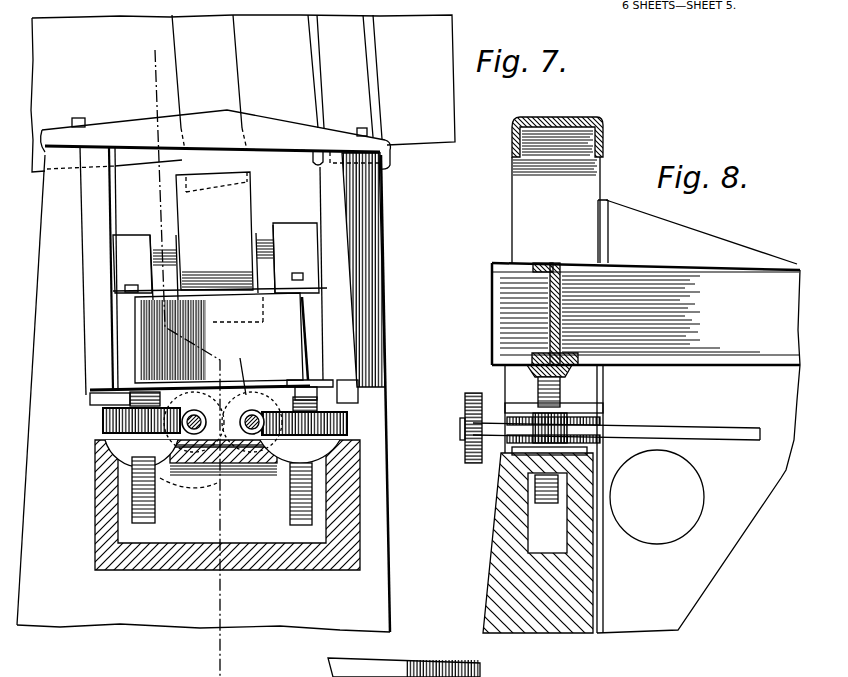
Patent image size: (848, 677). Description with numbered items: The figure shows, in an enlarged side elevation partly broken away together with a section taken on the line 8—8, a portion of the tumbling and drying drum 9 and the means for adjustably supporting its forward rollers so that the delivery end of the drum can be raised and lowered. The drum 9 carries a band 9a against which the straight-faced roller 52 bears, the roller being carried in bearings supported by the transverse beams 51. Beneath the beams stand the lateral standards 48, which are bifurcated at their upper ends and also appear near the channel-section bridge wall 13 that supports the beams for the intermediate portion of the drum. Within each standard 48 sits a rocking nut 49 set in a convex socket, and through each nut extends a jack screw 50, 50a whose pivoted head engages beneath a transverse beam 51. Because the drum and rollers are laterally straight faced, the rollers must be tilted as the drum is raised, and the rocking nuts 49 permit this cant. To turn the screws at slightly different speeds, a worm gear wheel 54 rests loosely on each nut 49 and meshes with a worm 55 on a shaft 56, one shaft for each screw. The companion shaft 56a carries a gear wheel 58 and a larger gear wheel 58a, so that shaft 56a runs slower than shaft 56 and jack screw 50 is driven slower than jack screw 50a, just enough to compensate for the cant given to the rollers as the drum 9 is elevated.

In FIG. 7, the section line 8— 8 is at (162, 76).
In FIG. 7, the tumbling and drying drum 9 is at (344, 201).
In FIG. 7, the band 9a is at (139, 93).
In FIG. 7, the bridge wall 13 is at (343, 556).
In FIG. 7, the lateral standard 48 is at (147, 605).
In FIG. 8, the lateral standard 48 is at (528, 552).
In FIG. 7, the rocking nut 49 is at (120, 442).
In FIG. 8, the rocking nut 49 is at (597, 453).
In FIG. 7, the jack screw 50 is at (308, 505).
In FIG. 8, the jack screw 50 is at (560, 398).
In FIG. 7, the jack screw 50a is at (153, 513).
In FIG. 7, the transverse beam 51 is at (306, 353).
In FIG. 8, the transverse beam 51 is at (646, 314).
In FIG. 7, the roller 52 is at (214, 231).
In FIG. 7, the worm gear wheel 54 is at (348, 424).
In FIG. 8, the worm gear wheel 54 is at (590, 423).
In FIG. 7, the worm 55 is at (103, 419).
In FIG. 7, the shaft 56 is at (197, 427).
In FIG. 7, the shaft 56a is at (203, 388).
In FIG. 8, the shaft 56a is at (720, 420).
In FIG. 7, the gear wheel 58 is at (190, 322).
In FIG. 7, the gear wheel 58a is at (257, 393).